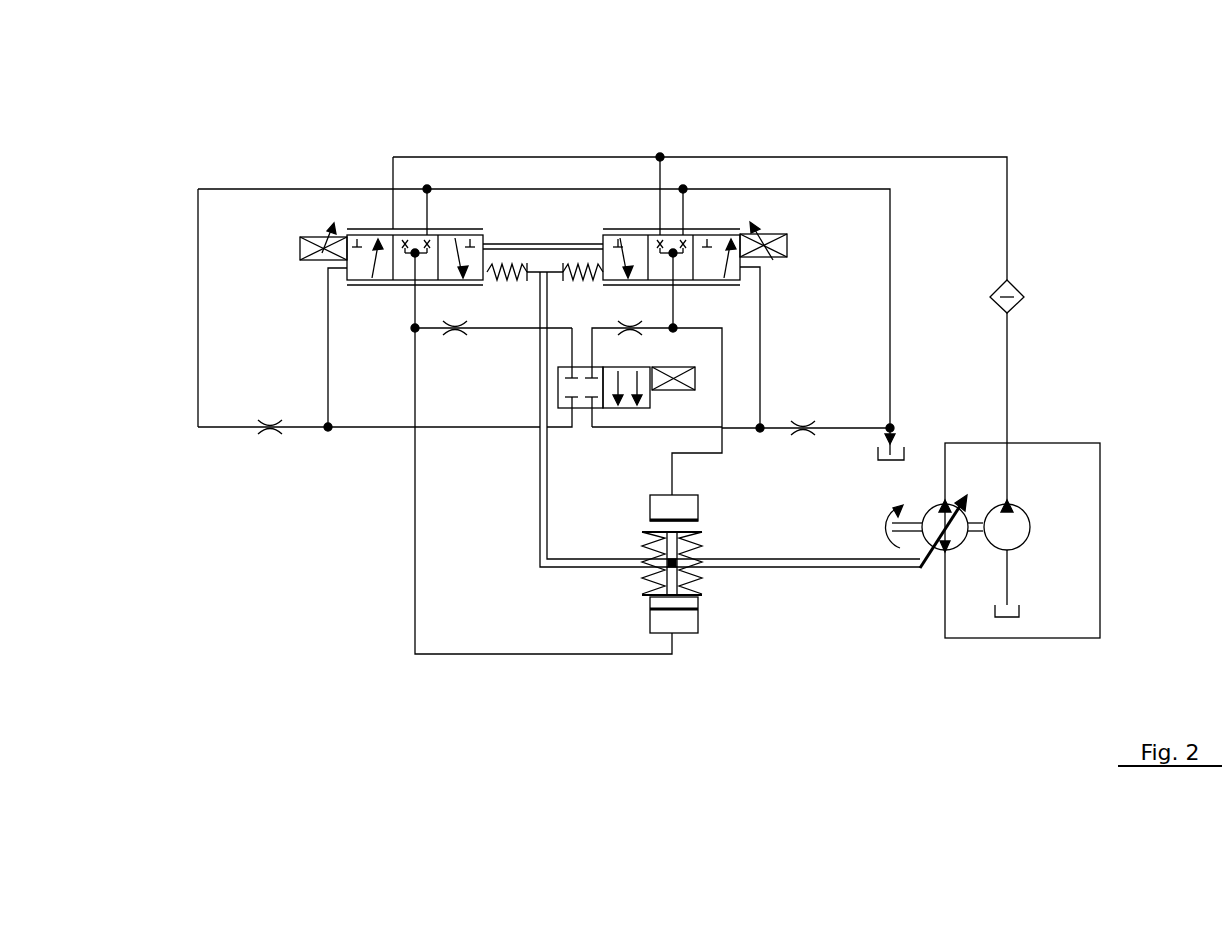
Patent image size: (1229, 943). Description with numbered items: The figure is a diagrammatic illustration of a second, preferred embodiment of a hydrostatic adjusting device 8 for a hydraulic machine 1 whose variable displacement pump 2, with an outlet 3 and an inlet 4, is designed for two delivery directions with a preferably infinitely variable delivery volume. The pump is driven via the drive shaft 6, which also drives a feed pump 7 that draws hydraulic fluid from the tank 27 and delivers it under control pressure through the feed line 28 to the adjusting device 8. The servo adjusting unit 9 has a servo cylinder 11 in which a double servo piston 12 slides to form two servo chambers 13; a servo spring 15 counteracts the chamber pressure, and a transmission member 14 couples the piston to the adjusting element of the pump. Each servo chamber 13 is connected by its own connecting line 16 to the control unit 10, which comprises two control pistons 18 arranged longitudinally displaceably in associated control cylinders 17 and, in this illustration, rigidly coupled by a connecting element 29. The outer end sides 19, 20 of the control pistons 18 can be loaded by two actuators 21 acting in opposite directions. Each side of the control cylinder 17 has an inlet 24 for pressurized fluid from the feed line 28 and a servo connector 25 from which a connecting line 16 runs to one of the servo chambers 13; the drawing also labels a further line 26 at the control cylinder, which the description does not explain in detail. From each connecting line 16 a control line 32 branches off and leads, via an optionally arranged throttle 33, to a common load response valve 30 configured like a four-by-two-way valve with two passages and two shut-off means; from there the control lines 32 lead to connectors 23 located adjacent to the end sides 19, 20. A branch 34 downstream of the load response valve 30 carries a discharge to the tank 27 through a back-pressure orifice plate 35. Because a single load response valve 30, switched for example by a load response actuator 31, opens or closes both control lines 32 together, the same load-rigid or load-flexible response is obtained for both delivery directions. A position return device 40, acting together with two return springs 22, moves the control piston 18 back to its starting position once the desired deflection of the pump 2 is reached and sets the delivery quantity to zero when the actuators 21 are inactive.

The hydraulic machine 1 is at (144, 183).
The variable displacement pump 2 is at (937, 513).
The outlet 3 is at (942, 502).
The inlet 4 is at (945, 545).
The drive shaft 6 is at (892, 525).
The feed pump 7 is at (1010, 530).
The hydrostatic adjusting device 8 is at (976, 331).
The servo adjusting unit 9 is at (701, 600).
The control unit 10 is at (360, 202).
The servo cylinder 11 is at (648, 508).
The servo piston 12 is at (698, 538).
The servo chamber 13 is at (680, 503).
The transmission member 14 is at (875, 568).
The servo spring 15 is at (648, 585).
The connecting line 16 is at (416, 610).
The control cylinder 17 is at (481, 232).
The control piston 18 is at (647, 238).
The outer end side 19 is at (345, 274).
The outer end side 20 is at (740, 272).
The actuator 21 is at (300, 242).
The return spring 22 is at (502, 252).
The connector 23 is at (345, 264).
The inlet 24 is at (392, 229).
The servo connector 25 is at (417, 290).
The control line 26 is at (427, 188).
The tank 27 is at (875, 455).
The feed line 28 is at (1008, 235).
The connecting element 29 is at (533, 250).
The load response valve 30 is at (578, 445).
The load response actuator 31 is at (672, 383).
The control line 32 is at (328, 348).
The throttle 33 is at (460, 318).
The branch 34 is at (198, 393).
The back-pressure orifice plate 35 is at (275, 418).
The position return device 40 is at (543, 522).